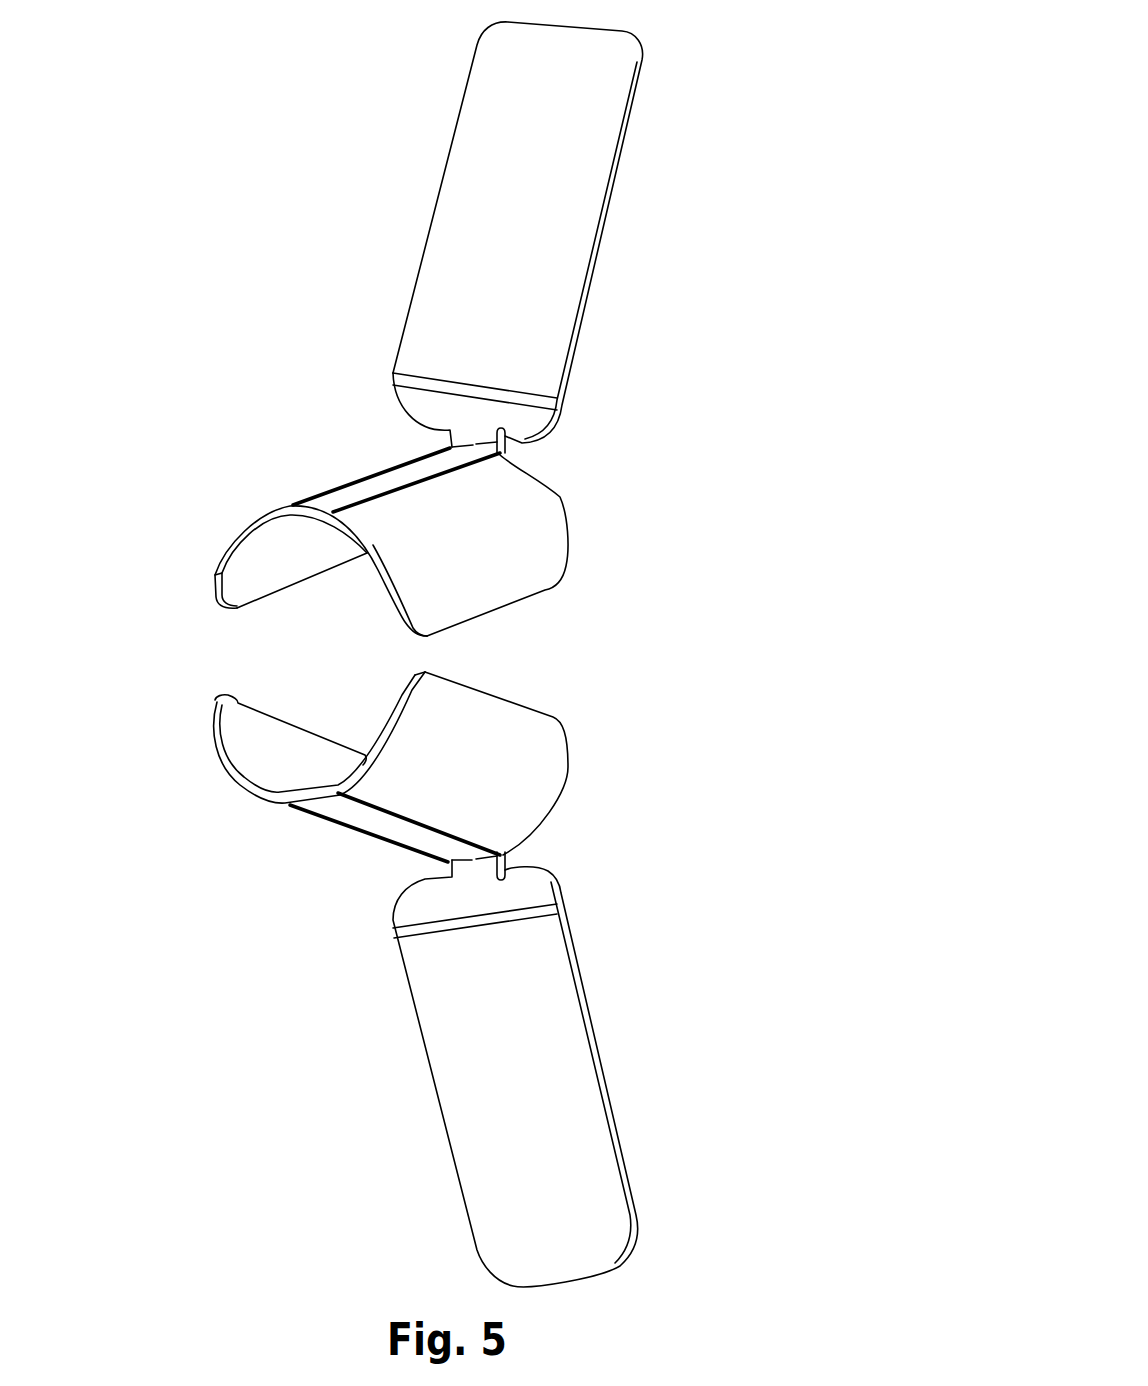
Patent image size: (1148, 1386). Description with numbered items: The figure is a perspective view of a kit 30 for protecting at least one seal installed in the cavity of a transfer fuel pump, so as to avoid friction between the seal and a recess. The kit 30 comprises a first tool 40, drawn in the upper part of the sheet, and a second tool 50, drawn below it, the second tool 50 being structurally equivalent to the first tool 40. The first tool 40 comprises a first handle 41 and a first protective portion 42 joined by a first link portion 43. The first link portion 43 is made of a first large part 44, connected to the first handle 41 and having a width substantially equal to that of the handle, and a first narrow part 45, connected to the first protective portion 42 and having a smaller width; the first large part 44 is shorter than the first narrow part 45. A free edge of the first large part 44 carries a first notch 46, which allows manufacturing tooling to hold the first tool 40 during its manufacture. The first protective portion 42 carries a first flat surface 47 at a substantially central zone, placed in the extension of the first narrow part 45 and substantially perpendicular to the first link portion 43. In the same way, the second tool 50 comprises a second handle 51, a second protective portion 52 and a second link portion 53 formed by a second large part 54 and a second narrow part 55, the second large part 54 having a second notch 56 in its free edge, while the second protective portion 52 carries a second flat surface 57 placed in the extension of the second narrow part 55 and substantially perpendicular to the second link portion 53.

The kit 30 is at (228, 63).
The first tool 40 is at (750, 102).
The first handle 41 is at (508, 157).
The first protective portion 42 is at (478, 549).
The first link portion 43 is at (270, 357).
The first large part 44 is at (437, 399).
The first narrow part 45 is at (450, 433).
The first notch 46 is at (510, 442).
The first flat surface 47 is at (333, 508).
The second tool 50 is at (675, 809).
The second handle 51 is at (557, 1160).
The second protective portion 52 is at (497, 732).
The second link portion 53 is at (280, 862).
The second large part 54 is at (450, 862).
The second narrow part 55 is at (418, 907).
The second notch 56 is at (505, 852).
The second flat surface 57 is at (330, 808).